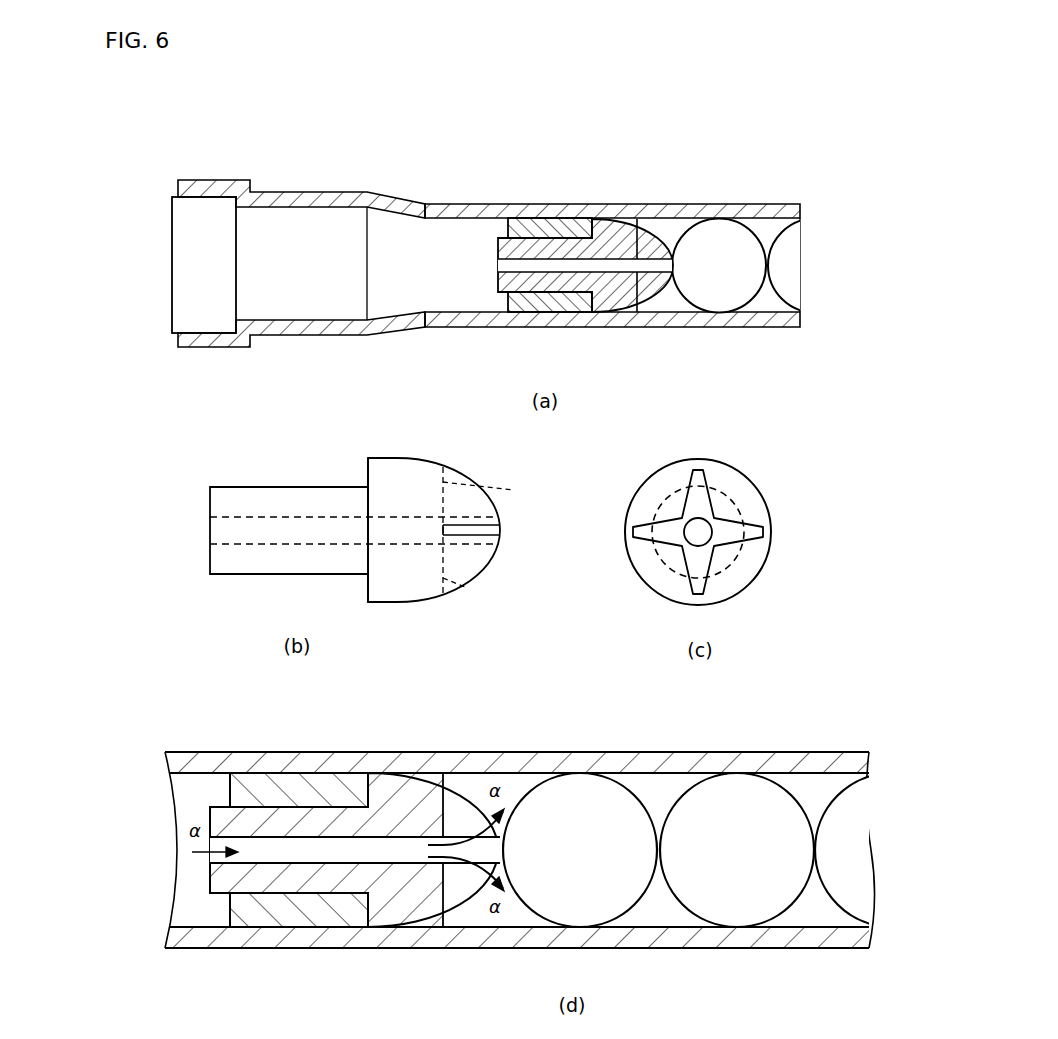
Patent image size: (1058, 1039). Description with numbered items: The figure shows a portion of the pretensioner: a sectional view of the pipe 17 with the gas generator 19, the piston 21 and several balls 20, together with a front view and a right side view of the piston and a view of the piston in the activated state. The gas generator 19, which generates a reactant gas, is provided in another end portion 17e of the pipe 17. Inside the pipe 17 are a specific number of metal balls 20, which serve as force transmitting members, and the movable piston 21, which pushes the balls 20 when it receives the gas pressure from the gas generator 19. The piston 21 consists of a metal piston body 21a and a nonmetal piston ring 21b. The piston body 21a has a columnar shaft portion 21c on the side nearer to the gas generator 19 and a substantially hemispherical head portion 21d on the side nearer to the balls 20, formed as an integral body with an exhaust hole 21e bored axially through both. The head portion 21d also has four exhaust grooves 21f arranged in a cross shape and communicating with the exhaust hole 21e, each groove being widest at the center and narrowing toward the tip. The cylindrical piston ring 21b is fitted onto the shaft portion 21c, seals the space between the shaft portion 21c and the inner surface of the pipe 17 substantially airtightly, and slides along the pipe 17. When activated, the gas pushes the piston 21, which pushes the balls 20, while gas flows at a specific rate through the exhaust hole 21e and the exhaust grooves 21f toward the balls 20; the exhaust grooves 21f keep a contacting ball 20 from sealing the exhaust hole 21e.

The pipe 17 is at (459, 202).
The another end portion of the pipe 17e is at (305, 193).
The gas generator 19 is at (307, 307).
The balls 20 is at (728, 237).
The piston 21 is at (512, 514).
The piston body 21a is at (548, 137).
The piston ring 21b is at (530, 227).
The shaft portion 21c is at (278, 492).
The head portion 21d is at (395, 465).
The exhaust hole 21e is at (537, 272).
The exhaust grooves 21f is at (659, 253).